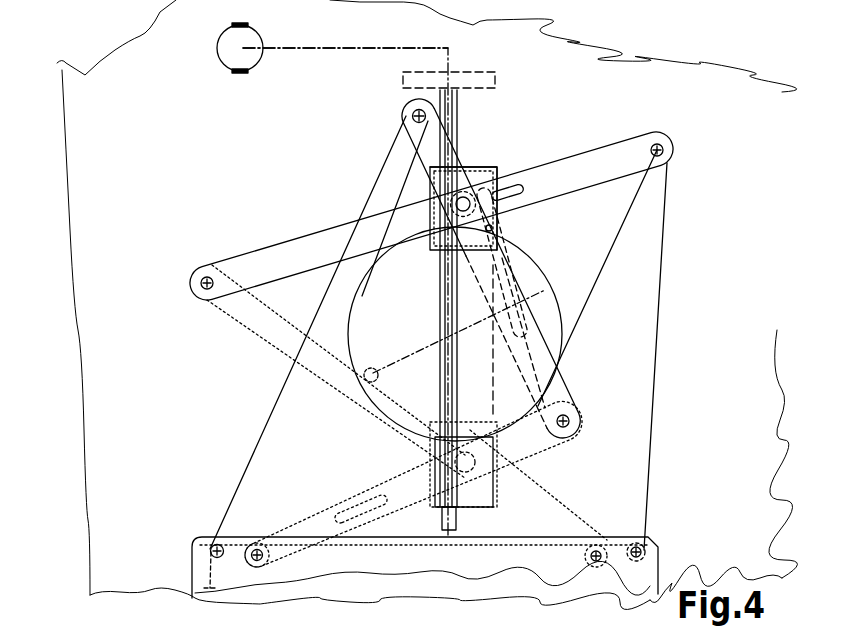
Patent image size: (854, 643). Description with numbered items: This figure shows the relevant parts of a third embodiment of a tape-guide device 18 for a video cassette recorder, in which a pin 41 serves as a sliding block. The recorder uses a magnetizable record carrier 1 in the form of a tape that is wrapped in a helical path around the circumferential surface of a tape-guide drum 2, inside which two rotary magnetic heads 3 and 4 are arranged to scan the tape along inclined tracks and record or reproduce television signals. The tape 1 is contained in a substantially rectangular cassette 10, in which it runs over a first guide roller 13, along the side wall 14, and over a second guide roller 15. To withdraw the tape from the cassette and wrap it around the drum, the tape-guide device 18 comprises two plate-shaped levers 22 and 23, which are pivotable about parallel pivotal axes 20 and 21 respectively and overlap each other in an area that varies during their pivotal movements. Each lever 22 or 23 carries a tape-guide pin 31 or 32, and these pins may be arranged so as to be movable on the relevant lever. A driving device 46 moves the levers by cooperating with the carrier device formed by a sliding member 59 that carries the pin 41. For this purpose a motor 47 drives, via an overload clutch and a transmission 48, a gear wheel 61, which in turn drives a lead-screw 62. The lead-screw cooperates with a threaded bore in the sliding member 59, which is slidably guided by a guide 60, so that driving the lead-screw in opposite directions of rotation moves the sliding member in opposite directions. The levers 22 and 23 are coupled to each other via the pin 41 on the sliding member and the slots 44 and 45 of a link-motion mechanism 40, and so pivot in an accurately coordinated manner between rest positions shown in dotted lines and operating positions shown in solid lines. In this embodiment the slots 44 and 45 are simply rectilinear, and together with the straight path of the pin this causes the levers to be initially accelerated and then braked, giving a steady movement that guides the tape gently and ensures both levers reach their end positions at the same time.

The magnetizable record carrier 1 is at (248, 460).
The tape-guide drum 2 is at (370, 410).
The rotary magnetic head 3 is at (370, 370).
The rotary magnetic head 4 is at (538, 295).
The cassette 10 is at (188, 580).
The first guide roller 13 is at (215, 548).
The side wall 14 is at (630, 537).
The second guide roller 15 is at (632, 580).
The tape-guide device 18 is at (386, 116).
The pivotal axis 20 is at (570, 422).
The pivotal axis 21 is at (203, 279).
The plate-shaped lever 22 is at (559, 388).
The plate-shaped lever 23 is at (281, 250).
The tape-guide pin 31 is at (413, 111).
The tape-guide pin 32 is at (669, 148).
The link-motion mechanism 40 is at (485, 131).
The pin 41 is at (478, 172).
The slot 44 is at (494, 228).
The slot 45 is at (521, 194).
The driving device 46 is at (502, 58).
The motor 47 is at (218, 46).
The transmission 48 is at (368, 48).
The sliding member 59 is at (468, 196).
The guide 60 is at (492, 335).
The gear wheel 61 is at (466, 72).
The lead-screw 62 is at (440, 520).